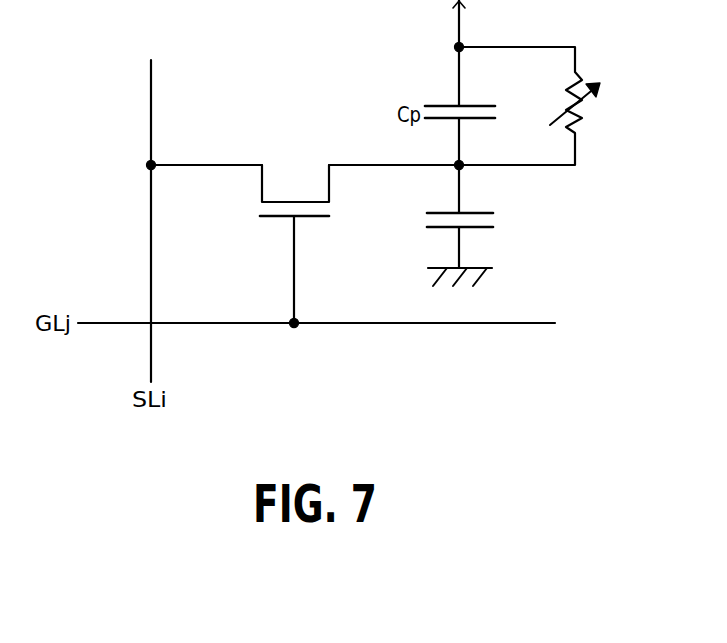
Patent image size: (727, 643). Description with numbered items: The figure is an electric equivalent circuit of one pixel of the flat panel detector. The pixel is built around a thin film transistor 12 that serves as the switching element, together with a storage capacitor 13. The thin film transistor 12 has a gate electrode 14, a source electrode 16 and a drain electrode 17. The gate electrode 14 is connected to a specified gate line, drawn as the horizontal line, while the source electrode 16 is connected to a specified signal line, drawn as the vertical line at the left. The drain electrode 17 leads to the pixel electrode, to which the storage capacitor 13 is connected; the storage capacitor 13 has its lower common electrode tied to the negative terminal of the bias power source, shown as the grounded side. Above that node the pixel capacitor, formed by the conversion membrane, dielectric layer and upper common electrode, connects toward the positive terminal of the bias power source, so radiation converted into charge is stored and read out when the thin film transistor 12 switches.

The thin film transistor 12 is at (281, 157).
The storage capacitor 13 is at (495, 221).
The gate electrode 14 is at (296, 264).
The source electrode 16 is at (200, 163).
The drain electrode 17 is at (350, 163).